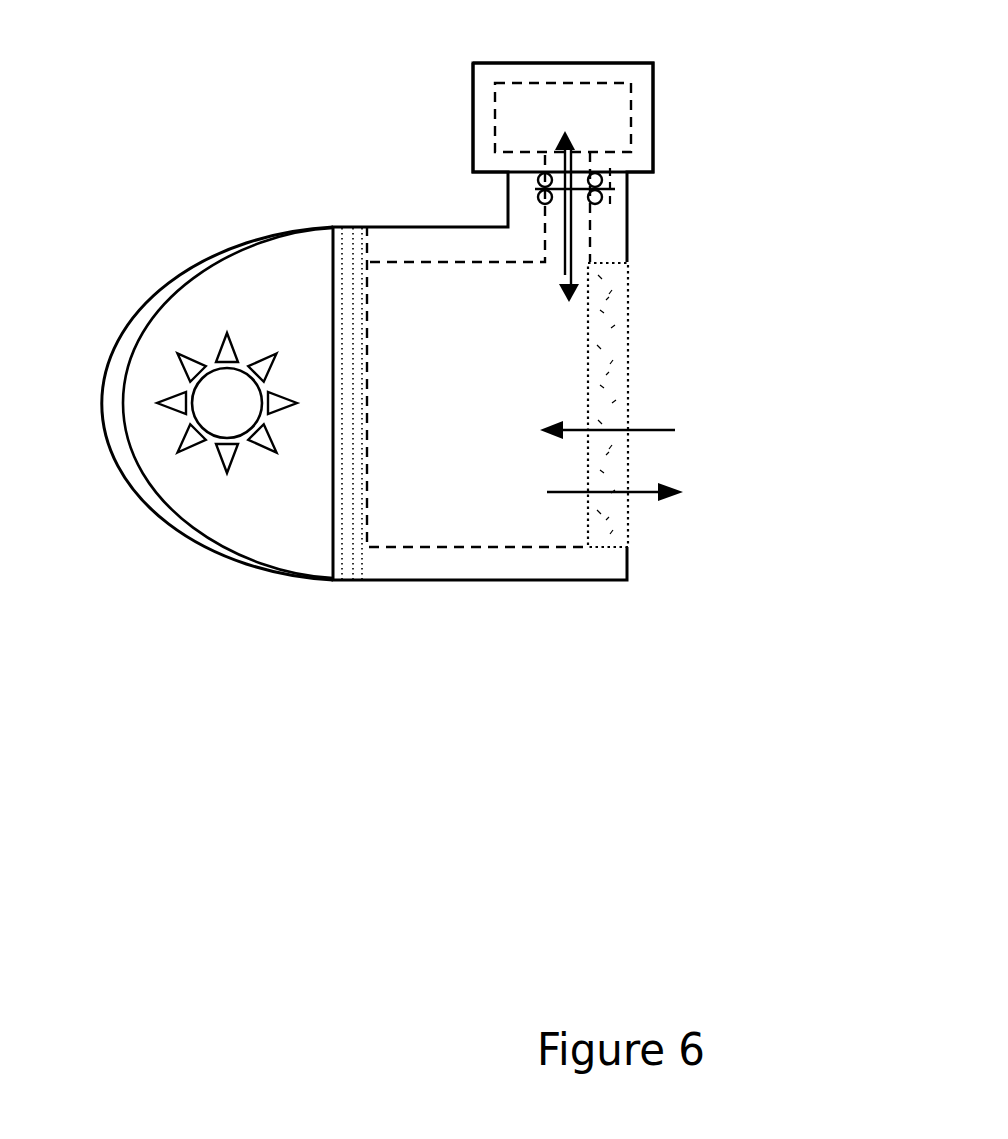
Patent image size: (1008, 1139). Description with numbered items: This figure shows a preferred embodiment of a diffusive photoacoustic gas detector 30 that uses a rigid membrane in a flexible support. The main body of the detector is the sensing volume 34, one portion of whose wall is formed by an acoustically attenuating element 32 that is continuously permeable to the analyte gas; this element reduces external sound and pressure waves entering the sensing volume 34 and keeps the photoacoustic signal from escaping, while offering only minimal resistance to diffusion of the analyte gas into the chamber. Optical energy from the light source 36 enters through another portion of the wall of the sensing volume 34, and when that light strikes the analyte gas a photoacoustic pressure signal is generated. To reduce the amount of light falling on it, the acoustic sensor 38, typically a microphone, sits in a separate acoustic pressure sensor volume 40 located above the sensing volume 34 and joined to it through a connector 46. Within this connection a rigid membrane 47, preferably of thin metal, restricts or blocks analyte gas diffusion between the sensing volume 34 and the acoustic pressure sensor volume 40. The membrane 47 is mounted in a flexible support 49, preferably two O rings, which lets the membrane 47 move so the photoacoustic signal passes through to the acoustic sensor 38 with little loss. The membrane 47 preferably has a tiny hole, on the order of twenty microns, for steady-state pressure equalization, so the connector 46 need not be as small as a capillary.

The diffusive photoacoustic gas detector 30 is at (196, 705).
The acoustically attenuating element 32 is at (612, 367).
The sensing volume 34 is at (453, 390).
The light source 36 is at (215, 397).
The acoustic sensor 38 is at (561, 100).
The acoustic pressure sensor volume 40 is at (502, 127).
The connector 46 is at (590, 228).
The rigid membrane 47 is at (603, 188).
The flexible support 49 is at (603, 198).